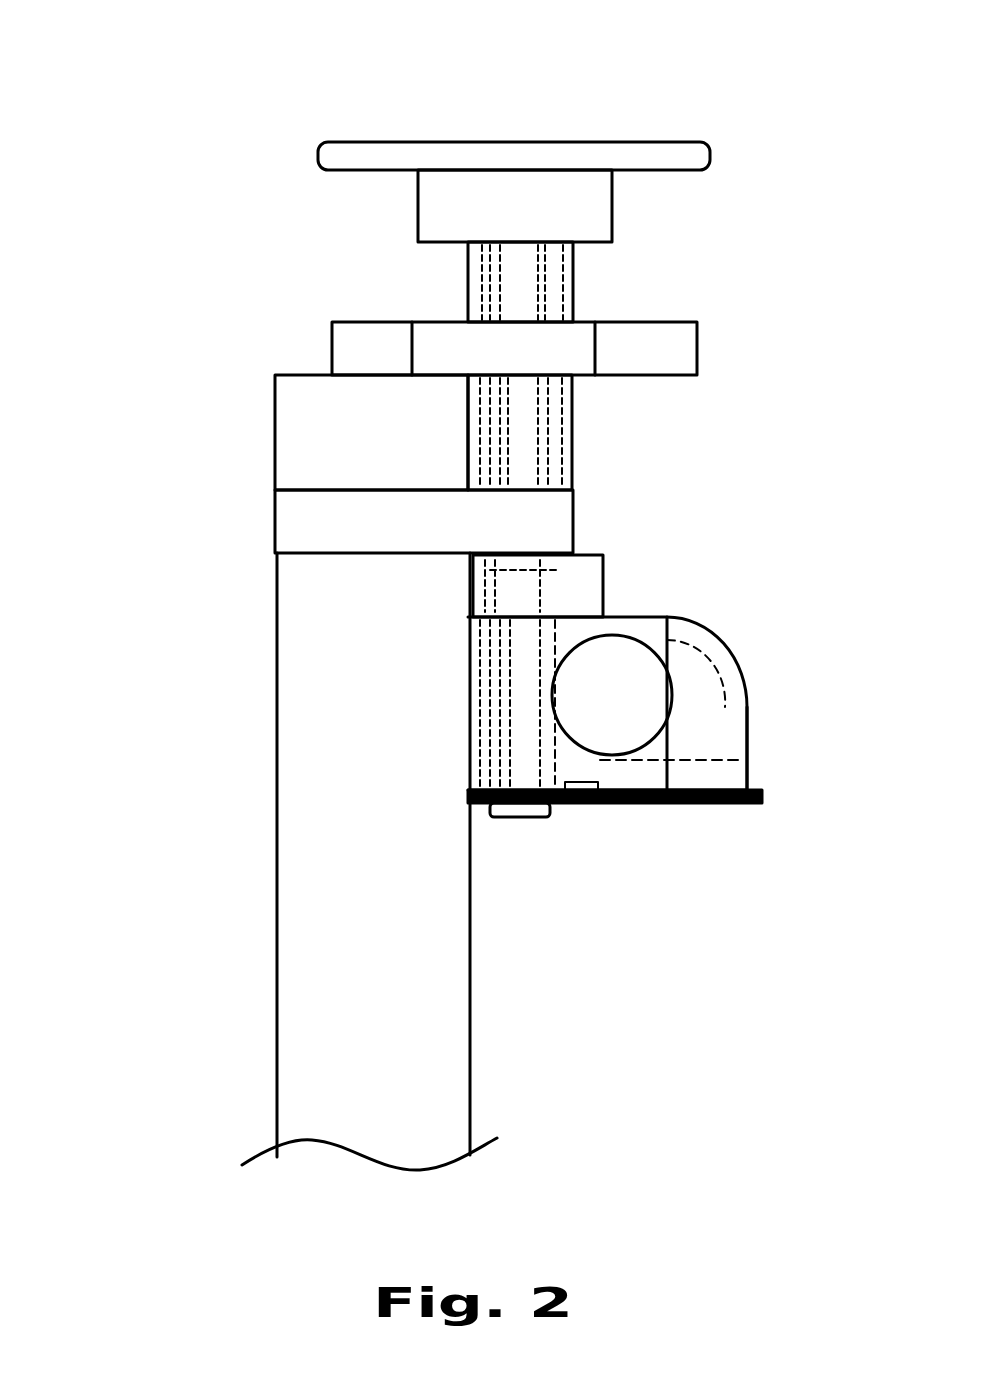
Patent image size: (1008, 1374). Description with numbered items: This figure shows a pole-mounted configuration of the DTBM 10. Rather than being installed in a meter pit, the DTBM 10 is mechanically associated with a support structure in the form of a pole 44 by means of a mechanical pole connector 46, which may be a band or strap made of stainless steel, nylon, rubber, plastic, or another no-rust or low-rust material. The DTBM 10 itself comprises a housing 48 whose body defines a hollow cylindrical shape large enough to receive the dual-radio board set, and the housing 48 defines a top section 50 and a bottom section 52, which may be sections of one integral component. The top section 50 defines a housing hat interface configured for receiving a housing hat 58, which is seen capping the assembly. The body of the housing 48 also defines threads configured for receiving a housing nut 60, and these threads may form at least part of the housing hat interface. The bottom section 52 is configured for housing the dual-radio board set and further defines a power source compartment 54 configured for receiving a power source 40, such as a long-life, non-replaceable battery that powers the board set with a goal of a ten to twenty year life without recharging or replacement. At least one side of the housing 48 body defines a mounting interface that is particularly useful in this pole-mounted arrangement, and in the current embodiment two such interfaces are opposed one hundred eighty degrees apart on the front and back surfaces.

The DTBM 10 is at (318, 260).
The power source 40 is at (622, 715).
The pole 44 is at (275, 768).
The mechanical pole connector 46 is at (273, 520).
The housing 48 is at (577, 467).
The top section 50 is at (593, 273).
The bottom section 52 is at (622, 597).
The power source compartment 54 is at (748, 707).
The housing hat 58 is at (593, 153).
The housing nut 60 is at (698, 347).